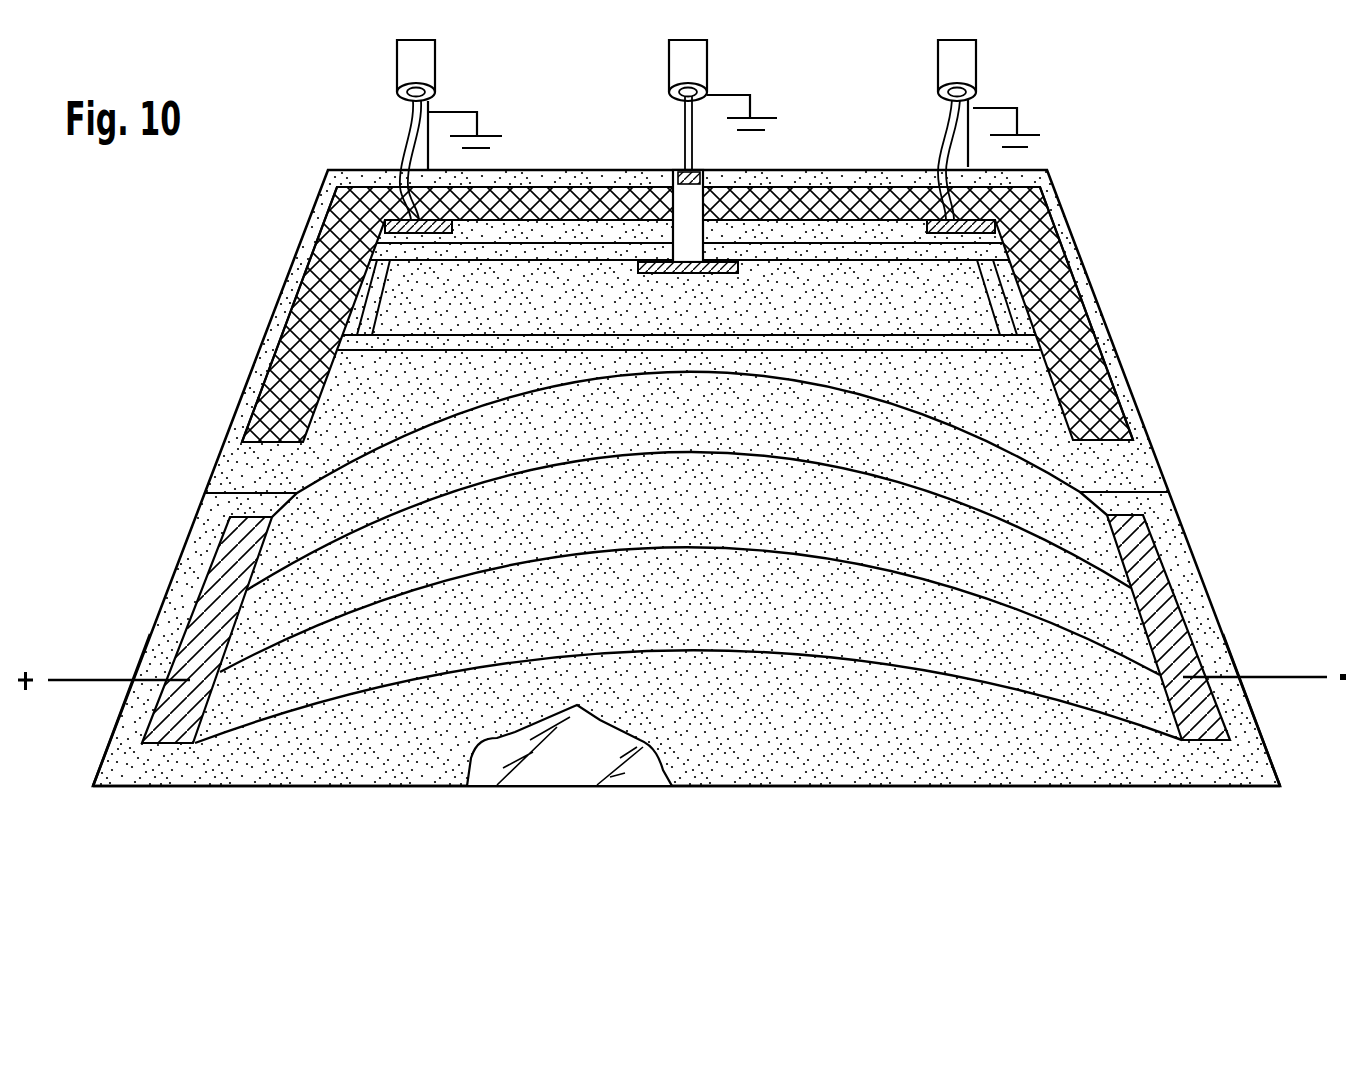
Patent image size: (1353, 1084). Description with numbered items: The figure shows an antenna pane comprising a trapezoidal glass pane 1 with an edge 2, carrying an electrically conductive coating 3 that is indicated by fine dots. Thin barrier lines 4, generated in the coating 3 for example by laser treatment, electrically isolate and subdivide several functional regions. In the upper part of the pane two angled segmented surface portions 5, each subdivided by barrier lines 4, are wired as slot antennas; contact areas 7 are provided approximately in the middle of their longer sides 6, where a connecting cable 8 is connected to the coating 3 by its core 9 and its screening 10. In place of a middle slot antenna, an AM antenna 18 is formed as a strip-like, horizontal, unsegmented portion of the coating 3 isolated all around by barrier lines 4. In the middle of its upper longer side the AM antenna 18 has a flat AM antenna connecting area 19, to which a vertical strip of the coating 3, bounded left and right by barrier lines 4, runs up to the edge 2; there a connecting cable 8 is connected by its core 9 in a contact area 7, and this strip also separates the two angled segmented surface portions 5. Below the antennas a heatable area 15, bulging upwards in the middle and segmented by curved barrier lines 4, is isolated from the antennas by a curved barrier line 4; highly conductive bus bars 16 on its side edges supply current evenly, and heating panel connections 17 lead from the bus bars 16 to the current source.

The glass pane 1 is at (418, 800).
The edge 2 is at (1177, 788).
The electrically conductive coating 3 is at (727, 742).
The barrier lines 4 is at (673, 242).
The segmented surface portion 5 is at (333, 232).
The longer sides 6 is at (533, 184).
The contact areas 7 is at (447, 219).
The connecting cable 8 is at (421, 64).
The core 9 is at (427, 137).
The screening 10 is at (417, 164).
The heatable area 15 is at (310, 668).
The bus bars 16 is at (213, 625).
The heating panel connections 17 is at (83, 705).
The AM antenna 18 is at (954, 309).
The AM antenna connecting area 19 is at (655, 264).